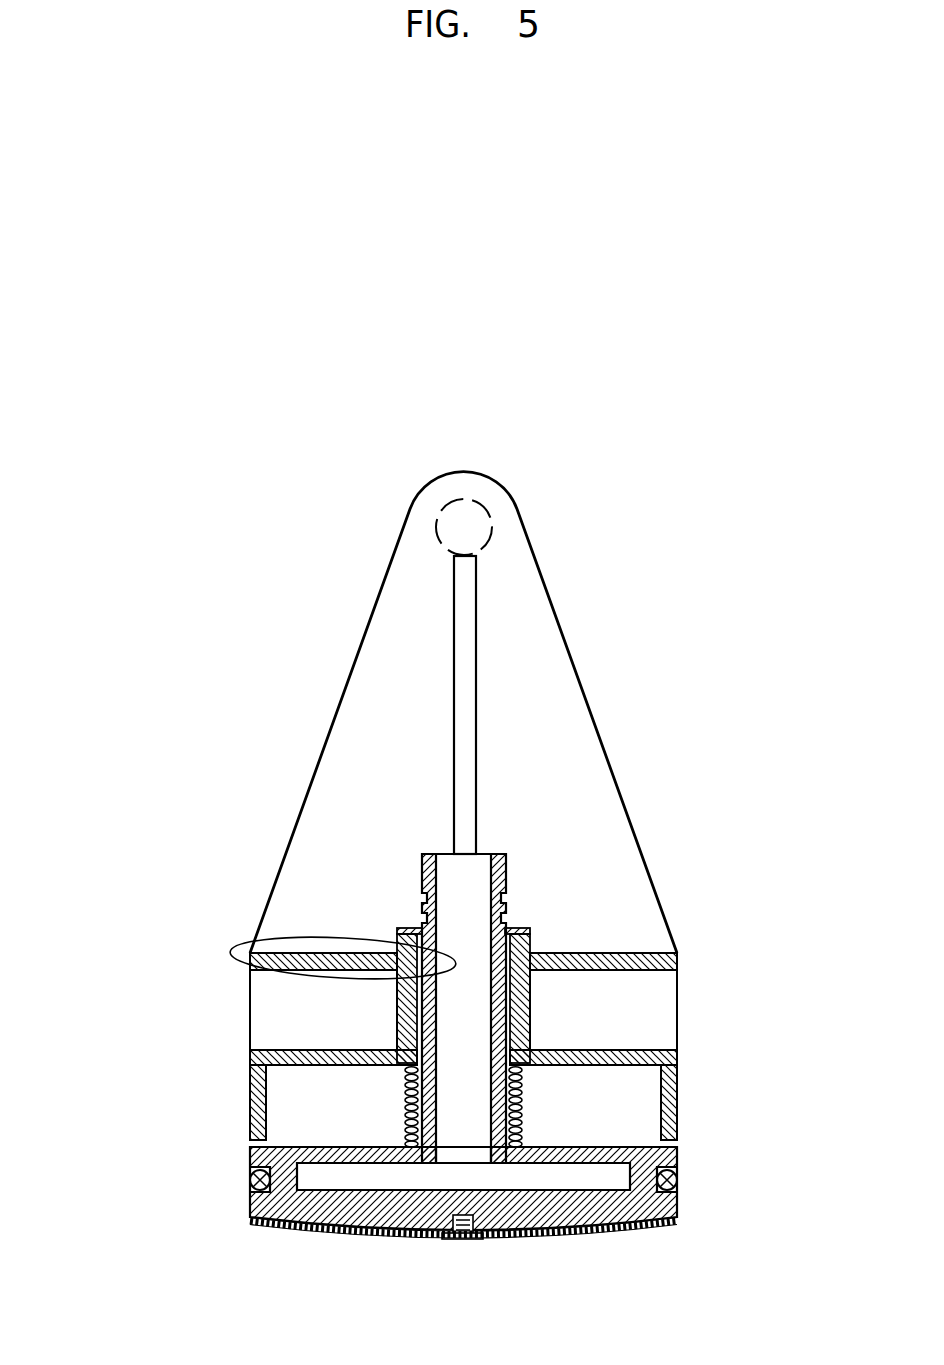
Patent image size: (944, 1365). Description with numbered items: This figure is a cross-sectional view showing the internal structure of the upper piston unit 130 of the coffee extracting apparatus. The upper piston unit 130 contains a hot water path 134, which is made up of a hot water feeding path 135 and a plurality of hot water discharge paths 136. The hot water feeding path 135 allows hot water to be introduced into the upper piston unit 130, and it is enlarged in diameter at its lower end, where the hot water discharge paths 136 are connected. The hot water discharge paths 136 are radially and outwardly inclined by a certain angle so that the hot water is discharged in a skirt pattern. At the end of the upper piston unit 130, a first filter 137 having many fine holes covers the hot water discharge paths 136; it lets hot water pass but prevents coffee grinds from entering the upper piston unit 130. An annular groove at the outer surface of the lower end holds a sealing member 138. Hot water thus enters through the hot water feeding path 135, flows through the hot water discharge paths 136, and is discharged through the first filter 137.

The upper piston unit 130 is at (604, 608).
The hot water path 134 is at (126, 956).
The hot water feeding path 135 is at (250, 950).
The hot water discharge paths 136 is at (365, 1207).
The first filter 137 is at (312, 1228).
The sealing member 138 is at (250, 1180).